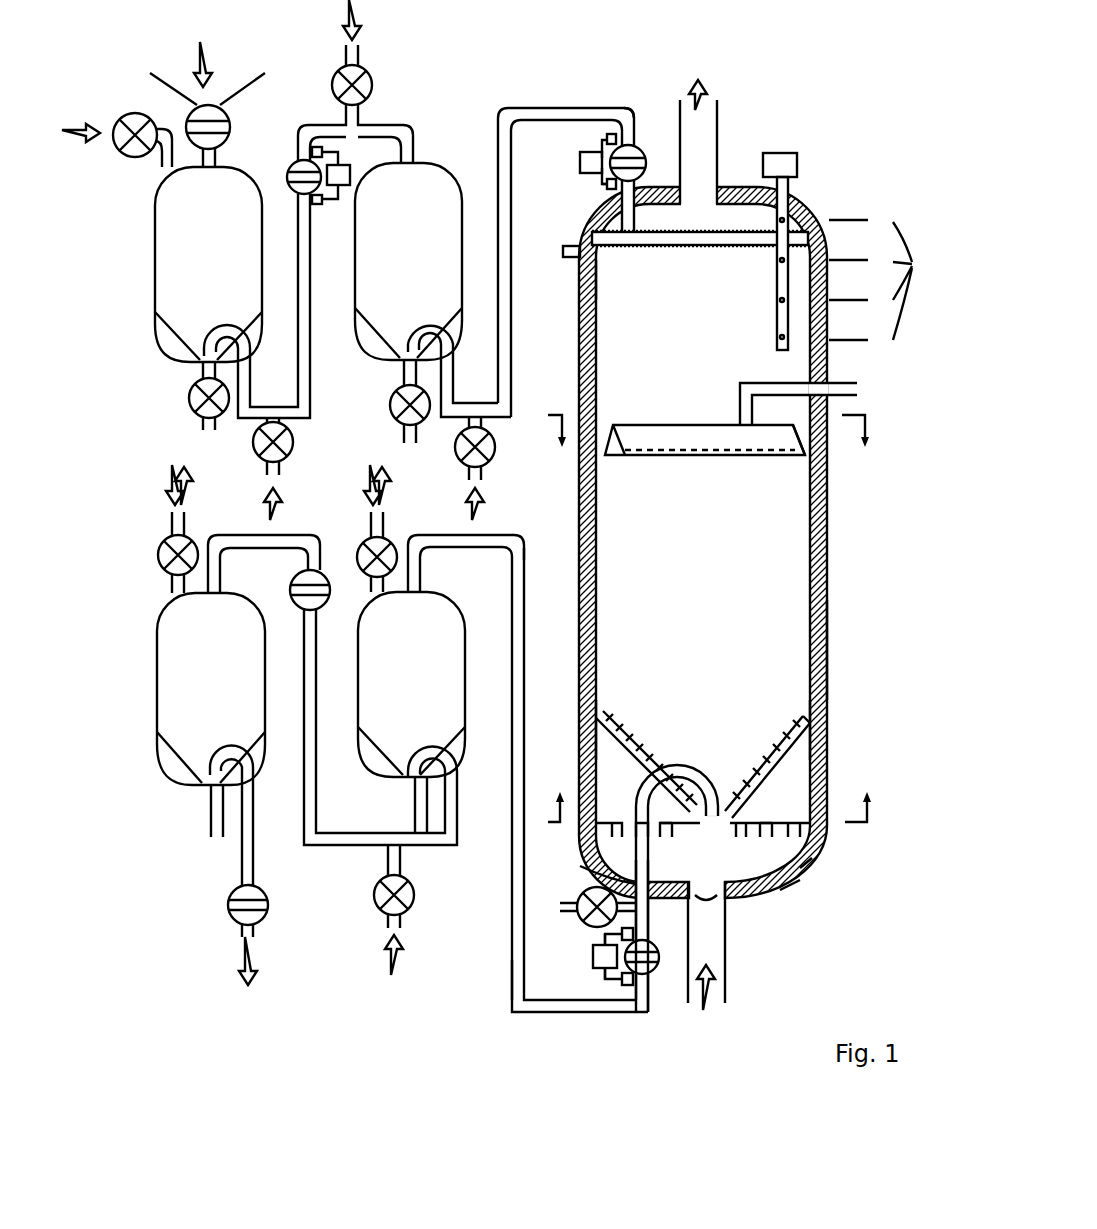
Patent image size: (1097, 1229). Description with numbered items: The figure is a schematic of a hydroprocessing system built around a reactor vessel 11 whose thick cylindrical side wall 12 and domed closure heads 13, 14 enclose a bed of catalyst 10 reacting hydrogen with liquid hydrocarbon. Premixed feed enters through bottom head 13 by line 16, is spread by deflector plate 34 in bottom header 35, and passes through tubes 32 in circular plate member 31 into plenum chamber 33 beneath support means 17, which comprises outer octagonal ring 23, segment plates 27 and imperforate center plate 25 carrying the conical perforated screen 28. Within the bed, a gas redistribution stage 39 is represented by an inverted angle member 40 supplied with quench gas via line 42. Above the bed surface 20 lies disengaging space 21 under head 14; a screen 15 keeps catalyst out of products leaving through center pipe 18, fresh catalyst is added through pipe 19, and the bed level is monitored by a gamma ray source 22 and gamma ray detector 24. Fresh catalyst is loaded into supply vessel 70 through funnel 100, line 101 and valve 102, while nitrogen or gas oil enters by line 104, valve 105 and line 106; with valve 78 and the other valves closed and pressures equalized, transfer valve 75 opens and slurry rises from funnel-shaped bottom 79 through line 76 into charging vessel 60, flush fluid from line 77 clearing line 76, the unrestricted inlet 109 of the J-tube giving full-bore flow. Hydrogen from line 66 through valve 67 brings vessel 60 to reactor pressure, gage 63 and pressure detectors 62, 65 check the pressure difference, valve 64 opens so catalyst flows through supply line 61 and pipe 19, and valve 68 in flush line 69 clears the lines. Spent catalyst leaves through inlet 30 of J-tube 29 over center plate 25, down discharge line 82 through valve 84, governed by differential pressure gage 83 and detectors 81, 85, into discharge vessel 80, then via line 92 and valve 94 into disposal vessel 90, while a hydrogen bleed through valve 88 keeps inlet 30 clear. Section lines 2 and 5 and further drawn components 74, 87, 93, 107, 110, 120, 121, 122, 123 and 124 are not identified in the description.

The section line 2- 2 is at (709, 792).
The section line 5- 5 is at (709, 448).
The catalyst bed 10 is at (725, 578).
The reactor vessel 11 is at (846, 586).
The cylindrical side wall 12 is at (828, 648).
The bottom head 13 is at (790, 895).
The domed head 14 is at (800, 215).
The screen 15 is at (722, 246).
The line 16 is at (727, 965).
The support means 17 is at (818, 765).
The center pipe 18 is at (719, 138).
The pipe 19 is at (636, 216).
The bed surface 20 is at (660, 250).
The space 21 is at (718, 203).
The gamma ray source 22 is at (776, 322).
The outer octagonal ring 23 is at (590, 732).
The gamma ray detector 24 is at (740, 280).
The imperforate center plate 25 is at (706, 826).
The segment plates 27 is at (640, 760).
The perforated plate or screen 28 is at (790, 755).
The J-tube 29 is at (676, 767).
The inlet 30 is at (712, 800).
The circular plate member 31 is at (822, 852).
The tubes 32 is at (777, 838).
The plenum chamber 33 is at (628, 793).
The deflector plate 34 is at (710, 910).
The bottom header 35 is at (670, 847).
The gas redistribution stage 39 is at (722, 408).
The inverted angle member 40 is at (652, 424).
The line 42 is at (872, 386).
The charging vessel 60 is at (463, 175).
The supply line 61 is at (514, 108).
The pressure detector 62 is at (622, 116).
The gage 63 is at (580, 160).
The shut-off valve 64 is at (641, 152).
The pressure detector 65 is at (606, 192).
The line 66 is at (360, 48).
The valve 67 is at (373, 85).
The valve 68 is at (455, 462).
The flush line 69 is at (484, 474).
The supply vessel 70 is at (155, 266).
The controller 74 is at (350, 170).
The transfer valve 75 is at (294, 190).
The line 76 is at (312, 308).
The line 77 is at (282, 468).
The valve 78 is at (256, 436).
The bottom 79 is at (162, 338).
The discharge vessel 80 is at (466, 640).
The detector 81 is at (605, 938).
The discharge line 82 is at (526, 625).
The differential pressure gage 83 is at (593, 957).
The valve 84 is at (658, 950).
The detector 85 is at (620, 987).
The line 87 is at (597, 860).
The valve 88 is at (580, 893).
The disposal vessel 90 is at (157, 656).
The line 92 is at (318, 725).
The valve 93 is at (358, 548).
The valve 94 is at (292, 592).
The funnel 100 is at (236, 82).
The line 101 is at (218, 150).
The valve 102 is at (232, 118).
The line 104 is at (118, 128).
The valve 105 is at (115, 150).
The line 106 is at (165, 180).
The valve 107 is at (416, 895).
The inlet 109 is at (400, 362).
The valve 110 is at (158, 568).
The dip tube 120 is at (412, 792).
The pipe 121 is at (508, 893).
The outlet 122 is at (210, 812).
The hopper 123 is at (168, 754).
The valve 124 is at (242, 880).